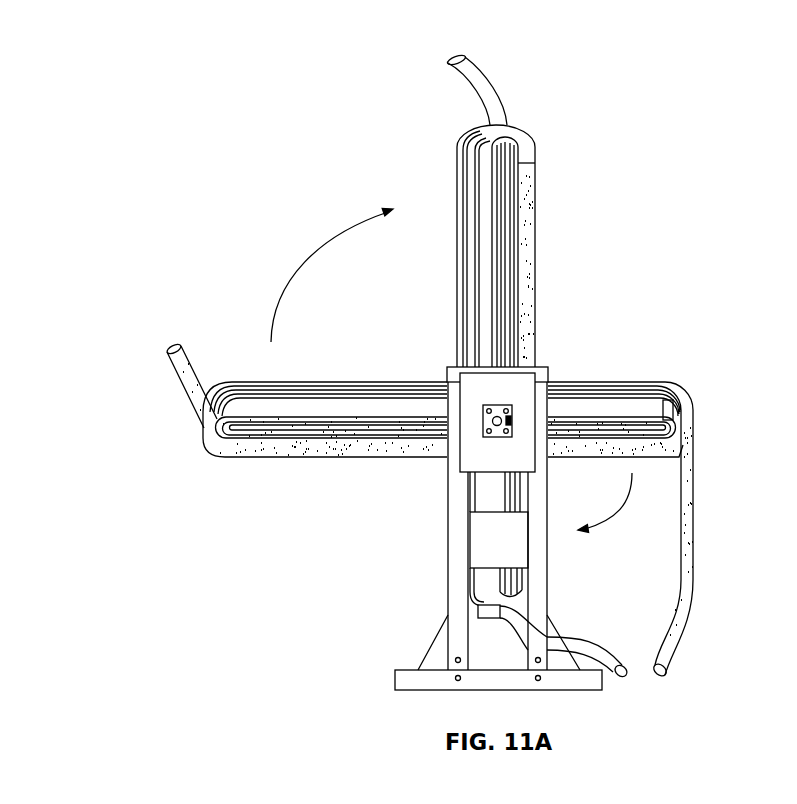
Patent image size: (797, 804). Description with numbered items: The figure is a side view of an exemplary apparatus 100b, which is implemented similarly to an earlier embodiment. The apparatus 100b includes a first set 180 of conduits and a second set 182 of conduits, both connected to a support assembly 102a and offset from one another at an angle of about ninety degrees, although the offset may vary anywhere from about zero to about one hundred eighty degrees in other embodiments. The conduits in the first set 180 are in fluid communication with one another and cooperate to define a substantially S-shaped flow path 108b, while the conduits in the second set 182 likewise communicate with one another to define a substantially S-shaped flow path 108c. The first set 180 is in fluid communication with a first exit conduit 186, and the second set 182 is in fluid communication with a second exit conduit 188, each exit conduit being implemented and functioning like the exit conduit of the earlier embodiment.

The apparatus 100b is at (549, 329).
The substantially S-shaped flow path 108b is at (525, 235).
The second set of conduits 182 is at (540, 325).
The first set of conduits 180 is at (311, 374).
The substantially S-shaped flow path 108c is at (391, 404).
The support assembly 102a is at (440, 525).
The first exit conduit 186 is at (694, 566).
The second exit conduit 188 is at (595, 643).